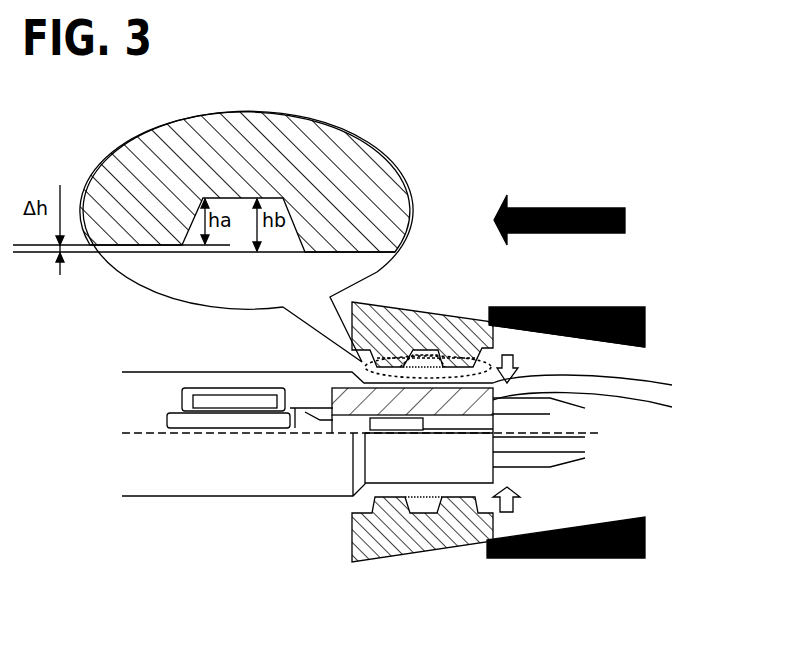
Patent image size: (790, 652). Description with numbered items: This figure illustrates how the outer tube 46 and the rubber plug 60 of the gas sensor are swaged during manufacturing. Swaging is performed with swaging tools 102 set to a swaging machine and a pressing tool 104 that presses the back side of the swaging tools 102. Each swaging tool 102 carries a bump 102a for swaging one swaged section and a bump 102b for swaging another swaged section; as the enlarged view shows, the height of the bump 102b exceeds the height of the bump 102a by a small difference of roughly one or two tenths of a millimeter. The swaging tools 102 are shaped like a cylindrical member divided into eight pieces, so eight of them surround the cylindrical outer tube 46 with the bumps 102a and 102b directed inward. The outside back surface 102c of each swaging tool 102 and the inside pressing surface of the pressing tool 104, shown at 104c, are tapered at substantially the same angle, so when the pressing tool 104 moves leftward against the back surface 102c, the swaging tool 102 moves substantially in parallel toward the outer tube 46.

The swaging tool 102 is at (245, 112).
The bump 102a is at (385, 590).
The bump 102b is at (460, 590).
The outside back surface 102c is at (397, 318).
The pressing tool 104 is at (645, 314).
The inclined surface of pressing member 104c is at (560, 333).
The outer tube 46 is at (598, 385).
The rubber plug 60 is at (518, 410).